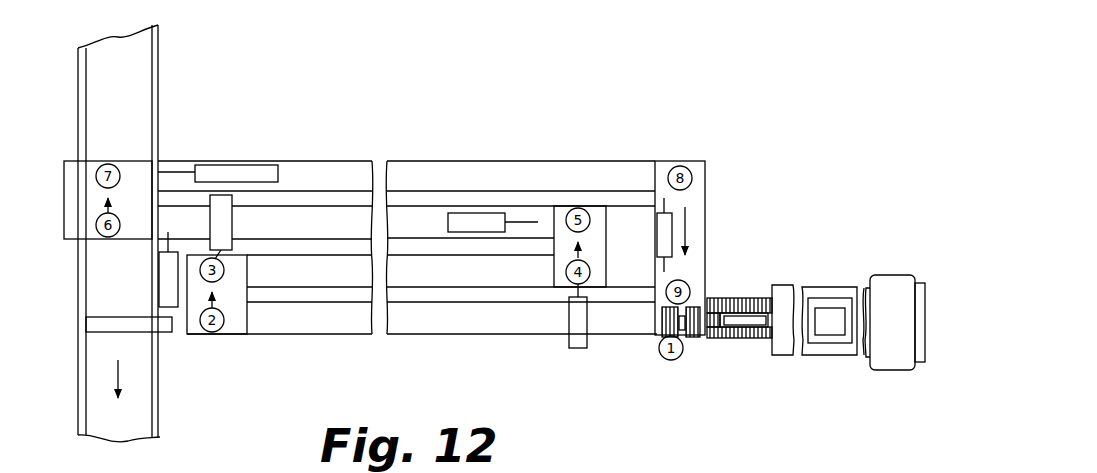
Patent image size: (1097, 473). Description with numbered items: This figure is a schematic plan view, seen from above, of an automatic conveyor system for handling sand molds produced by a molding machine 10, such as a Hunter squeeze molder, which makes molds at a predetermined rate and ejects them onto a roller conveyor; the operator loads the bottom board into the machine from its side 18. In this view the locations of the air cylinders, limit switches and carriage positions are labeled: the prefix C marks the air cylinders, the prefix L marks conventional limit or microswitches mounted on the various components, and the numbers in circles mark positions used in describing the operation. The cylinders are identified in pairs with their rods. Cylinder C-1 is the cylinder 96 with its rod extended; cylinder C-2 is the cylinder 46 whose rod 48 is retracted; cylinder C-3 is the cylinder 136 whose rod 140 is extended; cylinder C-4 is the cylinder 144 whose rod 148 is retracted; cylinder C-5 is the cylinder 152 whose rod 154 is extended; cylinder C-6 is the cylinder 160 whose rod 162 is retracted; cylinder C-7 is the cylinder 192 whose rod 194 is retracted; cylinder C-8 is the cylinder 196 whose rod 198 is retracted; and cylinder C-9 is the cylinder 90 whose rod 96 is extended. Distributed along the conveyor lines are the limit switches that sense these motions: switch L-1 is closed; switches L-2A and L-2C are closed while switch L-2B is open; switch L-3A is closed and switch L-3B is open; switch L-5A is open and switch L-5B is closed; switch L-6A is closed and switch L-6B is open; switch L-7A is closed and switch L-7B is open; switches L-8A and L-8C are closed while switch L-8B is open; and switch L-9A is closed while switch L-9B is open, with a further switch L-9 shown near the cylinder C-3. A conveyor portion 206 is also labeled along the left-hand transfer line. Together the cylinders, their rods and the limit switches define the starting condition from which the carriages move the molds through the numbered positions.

The molding machine 10 is at (885, 266).
The side of the molding machine 18 is at (827, 290).
The cylinder 46 is at (757, 342).
The rod 48 is at (722, 340).
The cylinder 90 is at (606, 260).
The cylinder 96 is at (679, 320).
The cylinder 136 is at (232, 228).
The rod 140 is at (222, 254).
The cylinder 144 is at (112, 332).
The rod 148 is at (172, 325).
The cylinder 152 is at (568, 340).
The rod 154 is at (582, 290).
The cylinder 160 is at (482, 232).
The rod 162 is at (528, 222).
The cylinder 192 is at (162, 288).
The rod 194 is at (153, 247).
The cylinder 196 is at (250, 165).
The rod 198 is at (183, 172).
The conveyor 206 is at (162, 420).
The air cylinder C-1 is at (687, 328).
The air cylinder C-2 is at (755, 300).
The air cylinder C-3 is at (221, 222).
The air cylinder C-4 is at (129, 324).
The air cylinder C-5 is at (578, 316).
The air cylinder C-6 is at (493, 222).
The air cylinder C-7 is at (168, 269).
The air cylinder C-8 is at (218, 173).
The air cylinder C-9 is at (664, 235).
The limit switch L-1 is at (683, 333).
The limit switch L-2A is at (718, 287).
The limit switch L-2B is at (711, 345).
The limit switch L-2C is at (750, 285).
The limit switch L-3A is at (230, 330).
The limit switch L-3B is at (240, 253).
The limit switch L-5A is at (558, 291).
The limit switch L-5B is at (581, 197).
The limit switch L-6A is at (497, 199).
The limit switch L-6B is at (528, 197).
The limit switch L-7A is at (146, 246).
The limit switch L-7B is at (115, 149).
The limit switch L-8A is at (715, 165).
The limit switch L-8B is at (167, 160).
The limit switch L-8C is at (143, 158).
The limit switch L-9 is at (269, 264).
The limit switch L-9A is at (653, 343).
The limit switch L-9B is at (687, 152).